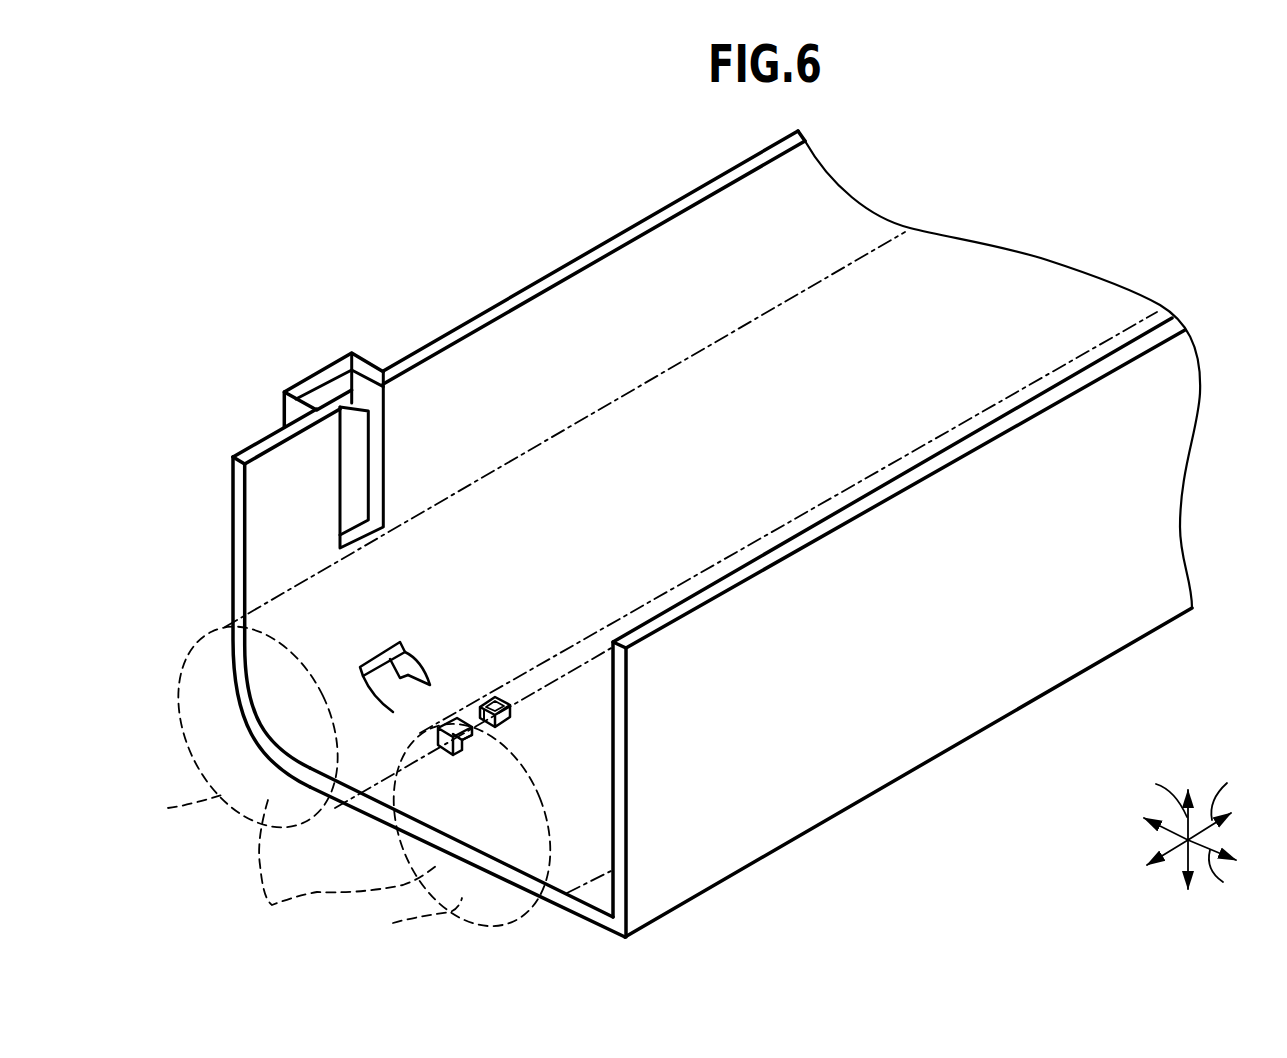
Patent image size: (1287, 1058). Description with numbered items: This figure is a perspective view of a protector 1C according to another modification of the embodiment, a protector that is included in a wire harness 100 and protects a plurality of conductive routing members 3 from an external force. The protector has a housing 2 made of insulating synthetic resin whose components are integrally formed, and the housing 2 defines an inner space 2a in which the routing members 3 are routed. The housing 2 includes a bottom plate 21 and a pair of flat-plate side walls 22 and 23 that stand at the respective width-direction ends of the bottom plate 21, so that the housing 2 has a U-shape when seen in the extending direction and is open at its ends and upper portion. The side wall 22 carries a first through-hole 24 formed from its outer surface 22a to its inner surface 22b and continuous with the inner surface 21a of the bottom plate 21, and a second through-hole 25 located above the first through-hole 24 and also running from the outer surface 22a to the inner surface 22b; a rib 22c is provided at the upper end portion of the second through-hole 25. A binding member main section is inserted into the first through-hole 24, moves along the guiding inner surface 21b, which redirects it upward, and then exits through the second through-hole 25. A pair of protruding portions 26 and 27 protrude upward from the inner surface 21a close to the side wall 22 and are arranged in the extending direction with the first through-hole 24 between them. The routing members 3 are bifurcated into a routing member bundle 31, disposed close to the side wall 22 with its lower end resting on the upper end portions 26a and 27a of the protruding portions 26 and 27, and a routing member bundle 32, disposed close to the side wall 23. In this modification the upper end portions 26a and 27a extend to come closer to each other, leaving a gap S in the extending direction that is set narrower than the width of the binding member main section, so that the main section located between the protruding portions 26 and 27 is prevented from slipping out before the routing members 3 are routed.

The wire harness 100 is at (430, 234).
The protector 1C is at (398, 286).
The housing 2 is at (621, 228).
The inner space 2a is at (718, 212).
The bottom plate 21 is at (577, 908).
The inner surface of the bottom plate 21a is at (370, 800).
The guiding inner surface 21b is at (480, 700).
The side wall 22 is at (232, 480).
The outer surface of the side wall 22a is at (266, 432).
The inner surface of the side wall 22b is at (537, 318).
The rib 22c is at (322, 368).
The side wall 23 is at (622, 845).
The first through-hole 24 is at (377, 678).
The second through-hole 25 is at (357, 425).
The protruding portion 26 is at (447, 752).
The upper end portion 26a is at (437, 721).
The protruding portion 27 is at (514, 706).
The upper end portion 27a is at (495, 697).
The gap S is at (467, 722).
The routing members 3 is at (268, 905).
The routing member bundle 31 is at (213, 800).
The routing member bundle 32 is at (458, 908).